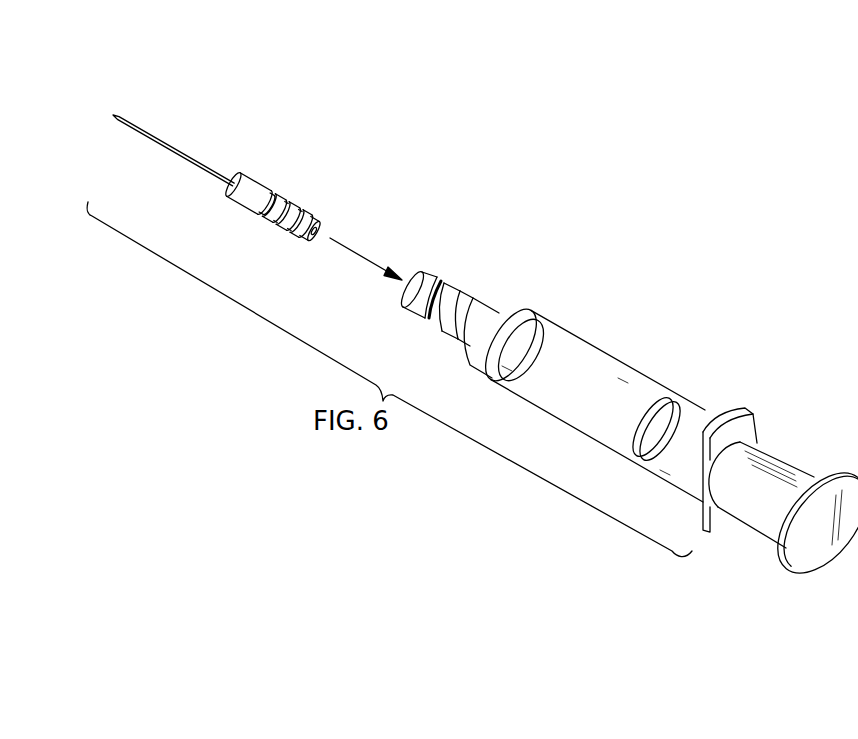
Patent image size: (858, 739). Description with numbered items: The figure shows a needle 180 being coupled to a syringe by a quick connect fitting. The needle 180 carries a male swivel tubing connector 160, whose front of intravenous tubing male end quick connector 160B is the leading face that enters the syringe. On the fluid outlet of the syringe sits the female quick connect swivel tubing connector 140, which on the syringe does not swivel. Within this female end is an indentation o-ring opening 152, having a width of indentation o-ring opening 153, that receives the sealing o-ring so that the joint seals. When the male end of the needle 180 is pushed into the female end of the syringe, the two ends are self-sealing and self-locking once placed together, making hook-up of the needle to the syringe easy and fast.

The needle 180 is at (158, 133).
The male swivel tubing connector 160 is at (285, 192).
The front of intravenous tubing male end quick connector 160B is at (312, 213).
The female quick connect swivel tubing connector 140 is at (435, 273).
The indentation o-ring opening 152 is at (445, 276).
The width of indentation o-ring opening 153 is at (447, 278).